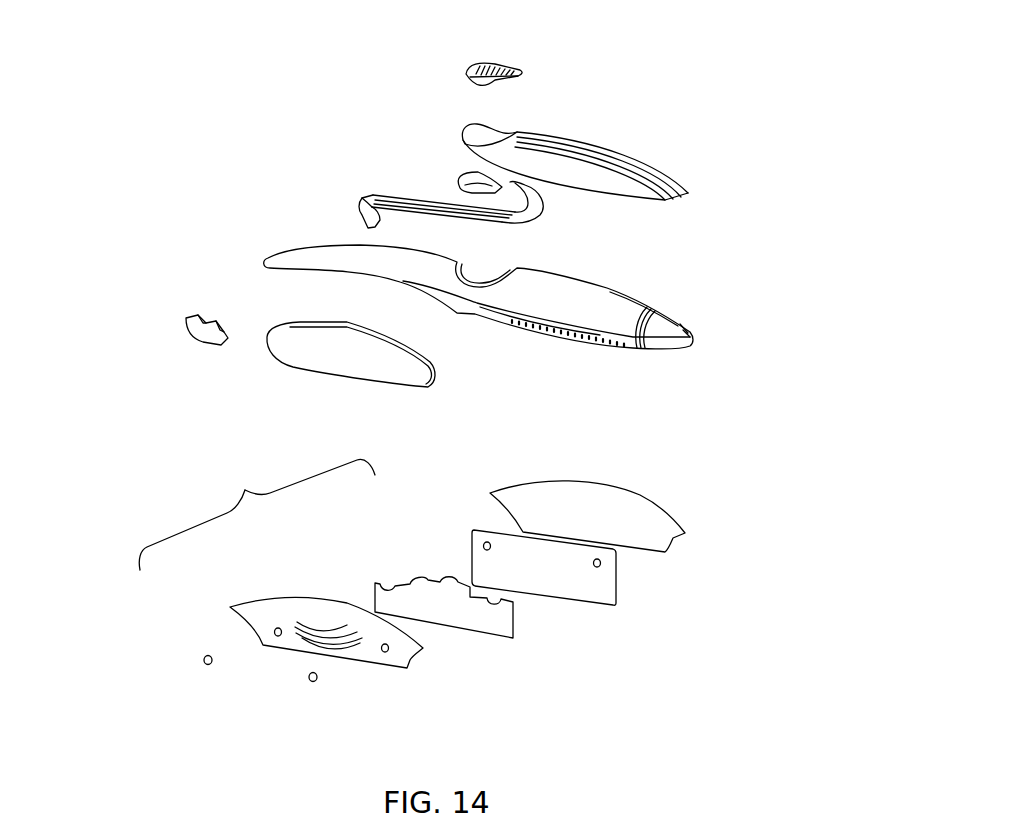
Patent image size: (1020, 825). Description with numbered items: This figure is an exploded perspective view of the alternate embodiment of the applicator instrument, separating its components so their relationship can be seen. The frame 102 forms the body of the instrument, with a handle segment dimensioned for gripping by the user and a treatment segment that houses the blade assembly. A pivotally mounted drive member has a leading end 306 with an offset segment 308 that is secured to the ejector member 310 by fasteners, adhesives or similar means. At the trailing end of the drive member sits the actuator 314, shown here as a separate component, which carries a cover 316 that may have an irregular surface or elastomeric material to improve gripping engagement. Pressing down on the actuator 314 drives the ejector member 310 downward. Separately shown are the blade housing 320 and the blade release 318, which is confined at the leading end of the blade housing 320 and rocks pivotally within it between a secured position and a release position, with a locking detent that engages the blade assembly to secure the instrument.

The frame 102 is at (300, 255).
The leading end 306 is at (437, 203).
The offset segment 308 is at (362, 200).
The ejector member 310 is at (513, 638).
The actuator 314 is at (540, 213).
The cover 316 is at (503, 62).
The blade release 318 is at (183, 318).
The blade housing 320 is at (245, 490).